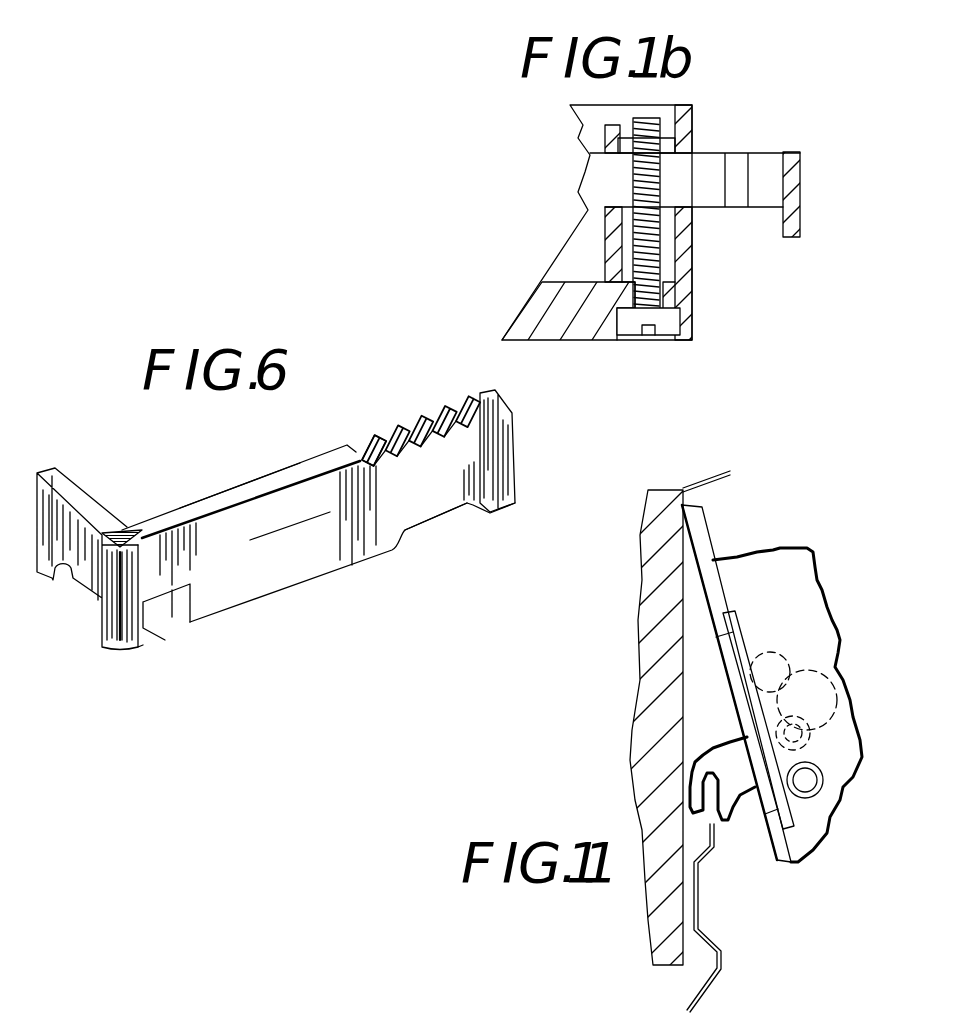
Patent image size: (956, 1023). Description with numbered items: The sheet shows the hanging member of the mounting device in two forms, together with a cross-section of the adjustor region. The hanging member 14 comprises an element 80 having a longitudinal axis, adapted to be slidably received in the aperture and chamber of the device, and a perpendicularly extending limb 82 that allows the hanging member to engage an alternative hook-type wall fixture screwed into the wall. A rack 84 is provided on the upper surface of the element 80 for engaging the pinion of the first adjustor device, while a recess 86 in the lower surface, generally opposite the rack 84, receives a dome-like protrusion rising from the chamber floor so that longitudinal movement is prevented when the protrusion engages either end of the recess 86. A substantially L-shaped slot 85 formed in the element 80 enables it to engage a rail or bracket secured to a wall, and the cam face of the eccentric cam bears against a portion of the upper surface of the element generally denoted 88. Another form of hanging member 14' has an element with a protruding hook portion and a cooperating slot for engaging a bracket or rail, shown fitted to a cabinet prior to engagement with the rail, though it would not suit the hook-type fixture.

In FIG. 6, the hanging member 14 is at (318, 573).
In FIG. 11, the hanging member 14' is at (738, 720).
In FIG. 6, the element 80 is at (305, 557).
In FIG. 6, the limb 82 is at (103, 606).
In FIG. 6, the rack 84 is at (413, 430).
In FIG. 6, the L-shaped slot 85 is at (171, 610).
In FIG. 6, the recess 86 is at (449, 523).
In FIG. 6, the portion of the upper surface of element 88 is at (228, 497).